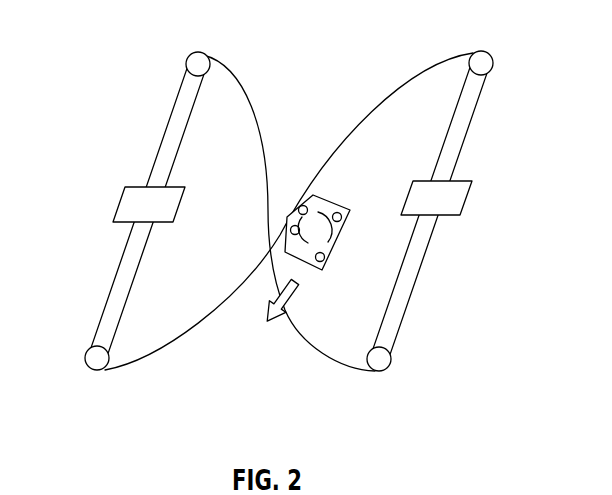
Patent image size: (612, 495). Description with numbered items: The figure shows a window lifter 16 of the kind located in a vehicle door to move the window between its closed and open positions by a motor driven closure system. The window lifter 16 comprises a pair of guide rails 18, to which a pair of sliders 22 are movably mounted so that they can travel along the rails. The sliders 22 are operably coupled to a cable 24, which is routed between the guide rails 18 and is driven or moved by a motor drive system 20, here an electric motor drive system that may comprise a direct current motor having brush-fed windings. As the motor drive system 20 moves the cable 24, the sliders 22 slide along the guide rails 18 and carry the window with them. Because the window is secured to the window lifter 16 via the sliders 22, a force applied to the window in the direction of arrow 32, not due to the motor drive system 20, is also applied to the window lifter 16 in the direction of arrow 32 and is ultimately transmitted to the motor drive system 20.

The window lifter 16 is at (441, 274).
The guide rails 18 is at (103, 318).
The motor drive system 20 is at (320, 285).
The sliders 22 is at (118, 206).
The cable 24 is at (393, 82).
The arrow 32 is at (272, 329).